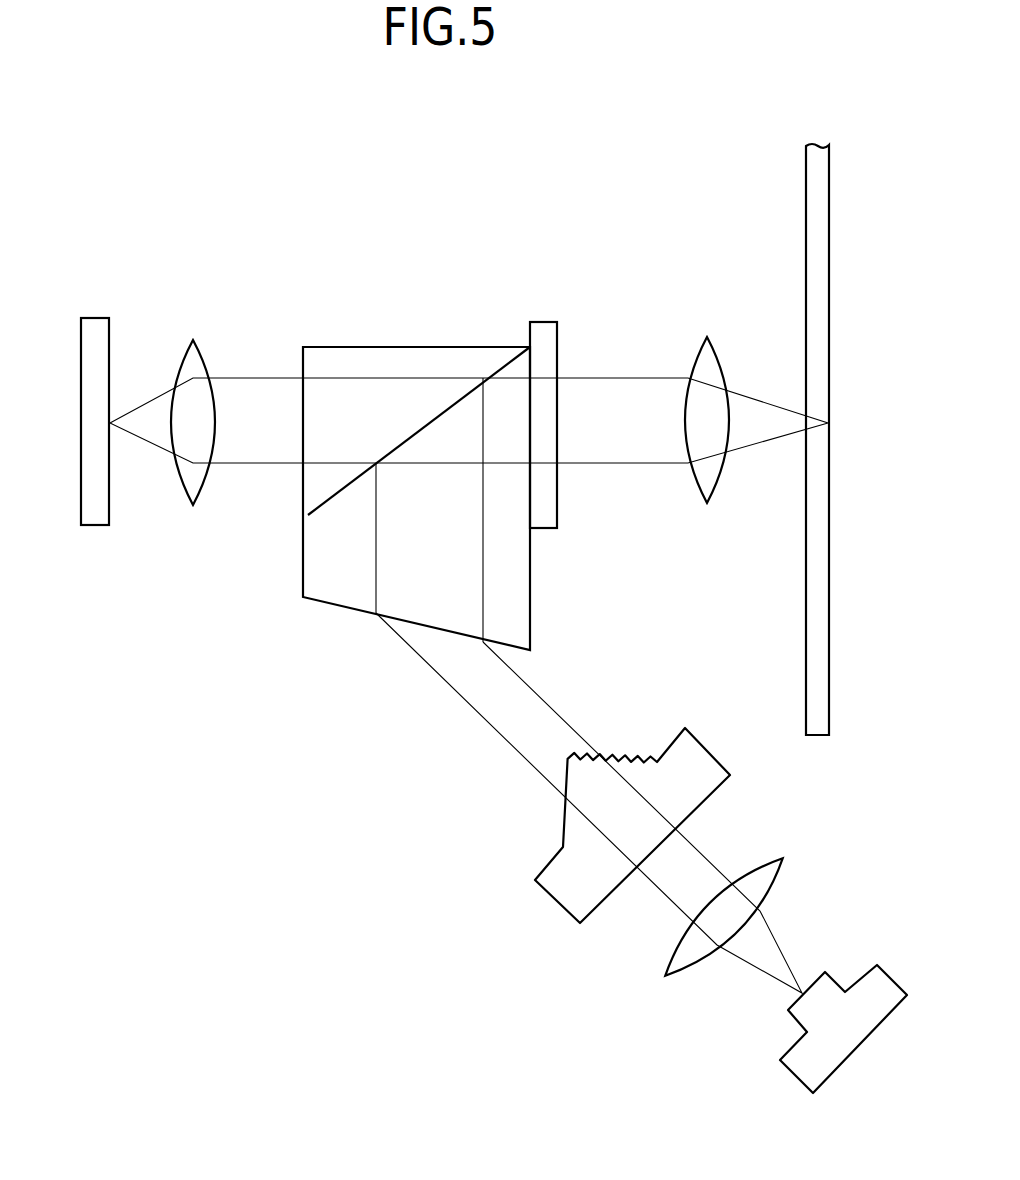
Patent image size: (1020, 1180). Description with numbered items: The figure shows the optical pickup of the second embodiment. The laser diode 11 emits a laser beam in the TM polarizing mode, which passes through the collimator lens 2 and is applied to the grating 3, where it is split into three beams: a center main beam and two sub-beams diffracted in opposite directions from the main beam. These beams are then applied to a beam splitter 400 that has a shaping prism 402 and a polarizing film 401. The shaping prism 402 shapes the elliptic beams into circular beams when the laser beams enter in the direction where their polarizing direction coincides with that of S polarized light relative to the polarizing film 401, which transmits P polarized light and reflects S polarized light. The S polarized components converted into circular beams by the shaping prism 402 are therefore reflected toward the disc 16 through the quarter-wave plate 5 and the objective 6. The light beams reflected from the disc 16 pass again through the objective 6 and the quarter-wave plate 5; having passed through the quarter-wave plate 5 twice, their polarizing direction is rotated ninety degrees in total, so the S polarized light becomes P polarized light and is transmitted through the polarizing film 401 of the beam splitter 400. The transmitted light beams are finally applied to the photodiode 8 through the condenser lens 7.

The photodiode 8 is at (97, 318).
The condenser lens 7 is at (199, 492).
The beam splitter 400 is at (377, 348).
The polarizing film 401 is at (445, 400).
The shaping prism 402 is at (333, 600).
The quarter-wave plate 5 is at (557, 528).
The objective 6 is at (718, 492).
The disc 16 is at (822, 605).
The grating 3 is at (697, 772).
The collimator lens 2 is at (782, 867).
The laser diode 11 is at (807, 1073).